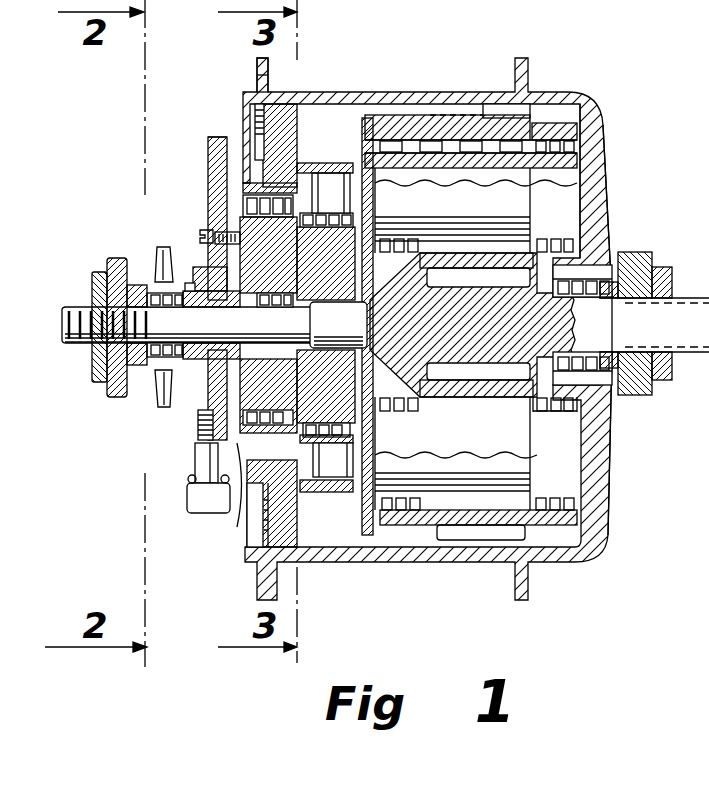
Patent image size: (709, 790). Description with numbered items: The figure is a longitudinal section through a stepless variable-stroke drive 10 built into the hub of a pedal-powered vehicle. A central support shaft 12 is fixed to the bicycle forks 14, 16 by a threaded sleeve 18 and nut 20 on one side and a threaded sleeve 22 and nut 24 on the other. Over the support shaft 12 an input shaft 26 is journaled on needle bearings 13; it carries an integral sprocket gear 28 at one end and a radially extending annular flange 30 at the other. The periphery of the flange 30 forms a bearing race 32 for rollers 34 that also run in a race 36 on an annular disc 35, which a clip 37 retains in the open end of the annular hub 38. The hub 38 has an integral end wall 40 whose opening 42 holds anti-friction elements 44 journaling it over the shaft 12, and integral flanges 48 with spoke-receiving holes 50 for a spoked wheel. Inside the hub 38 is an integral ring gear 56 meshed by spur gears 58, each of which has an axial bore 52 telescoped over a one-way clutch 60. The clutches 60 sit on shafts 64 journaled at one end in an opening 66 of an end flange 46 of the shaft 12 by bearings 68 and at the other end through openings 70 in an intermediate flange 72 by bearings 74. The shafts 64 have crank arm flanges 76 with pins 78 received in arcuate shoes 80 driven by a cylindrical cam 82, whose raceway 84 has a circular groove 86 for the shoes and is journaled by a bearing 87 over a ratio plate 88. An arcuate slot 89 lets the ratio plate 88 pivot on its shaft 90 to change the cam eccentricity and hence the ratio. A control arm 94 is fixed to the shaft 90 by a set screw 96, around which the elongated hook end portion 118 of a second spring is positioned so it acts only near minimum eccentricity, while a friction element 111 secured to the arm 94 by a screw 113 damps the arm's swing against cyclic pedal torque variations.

The drive 10 is at (448, 77).
The central support shaft 12 is at (82, 345).
The needle bearings 13 is at (275, 312).
The fork 14 is at (114, 398).
The fork 16 is at (647, 393).
The threaded sleeve 18 is at (158, 398).
The nut 20 is at (100, 275).
The threaded sleeve 22 is at (622, 265).
The nut 24 is at (672, 276).
The shaft 26 is at (190, 282).
The sprocket gear 28 is at (162, 256).
The annular flange 30 is at (280, 279).
The bearing race 32 is at (237, 527).
The anti-friction elements 34 is at (288, 212).
The annular disc 35 is at (297, 119).
The bearing race 36 is at (215, 200).
The clip 37 is at (256, 116).
The annular hub 38 is at (300, 92).
The end wall 40 is at (610, 203).
The opening 42 is at (604, 378).
The anti-friction elements 44 is at (591, 289).
The end flange 46 is at (537, 373).
The flanges 48 is at (257, 70).
The spoke-receiving holes 50 is at (257, 85).
The axial bore 52 is at (520, 175).
The ring gear 56 is at (540, 107).
The spur gears 58 is at (487, 281).
The one-way clutch 60 is at (473, 170).
The shafts 64 is at (580, 200).
The opening 66 is at (558, 413).
The bearings 68 is at (540, 413).
The openings 70 is at (456, 453).
The intermediate flange 72 is at (427, 285).
The bearings 74 is at (397, 140).
The crank arm flanges 76 is at (352, 125).
The pins 78 is at (343, 173).
The arcuate shoes 80 is at (324, 170).
The cylindrical cam 82 is at (355, 494).
The raceway 84 is at (311, 511).
The circular groove 86 is at (320, 487).
The bearing 87 is at (320, 380).
The ratio plate 88 is at (340, 277).
The arcuate slot 89 is at (322, 300).
The shaft 90 is at (187, 405).
The control arm 94 is at (218, 137).
The set screw 96 is at (197, 460).
The friction element 111 is at (238, 233).
The screw 113 is at (200, 233).
The hook end portion 118 is at (188, 480).